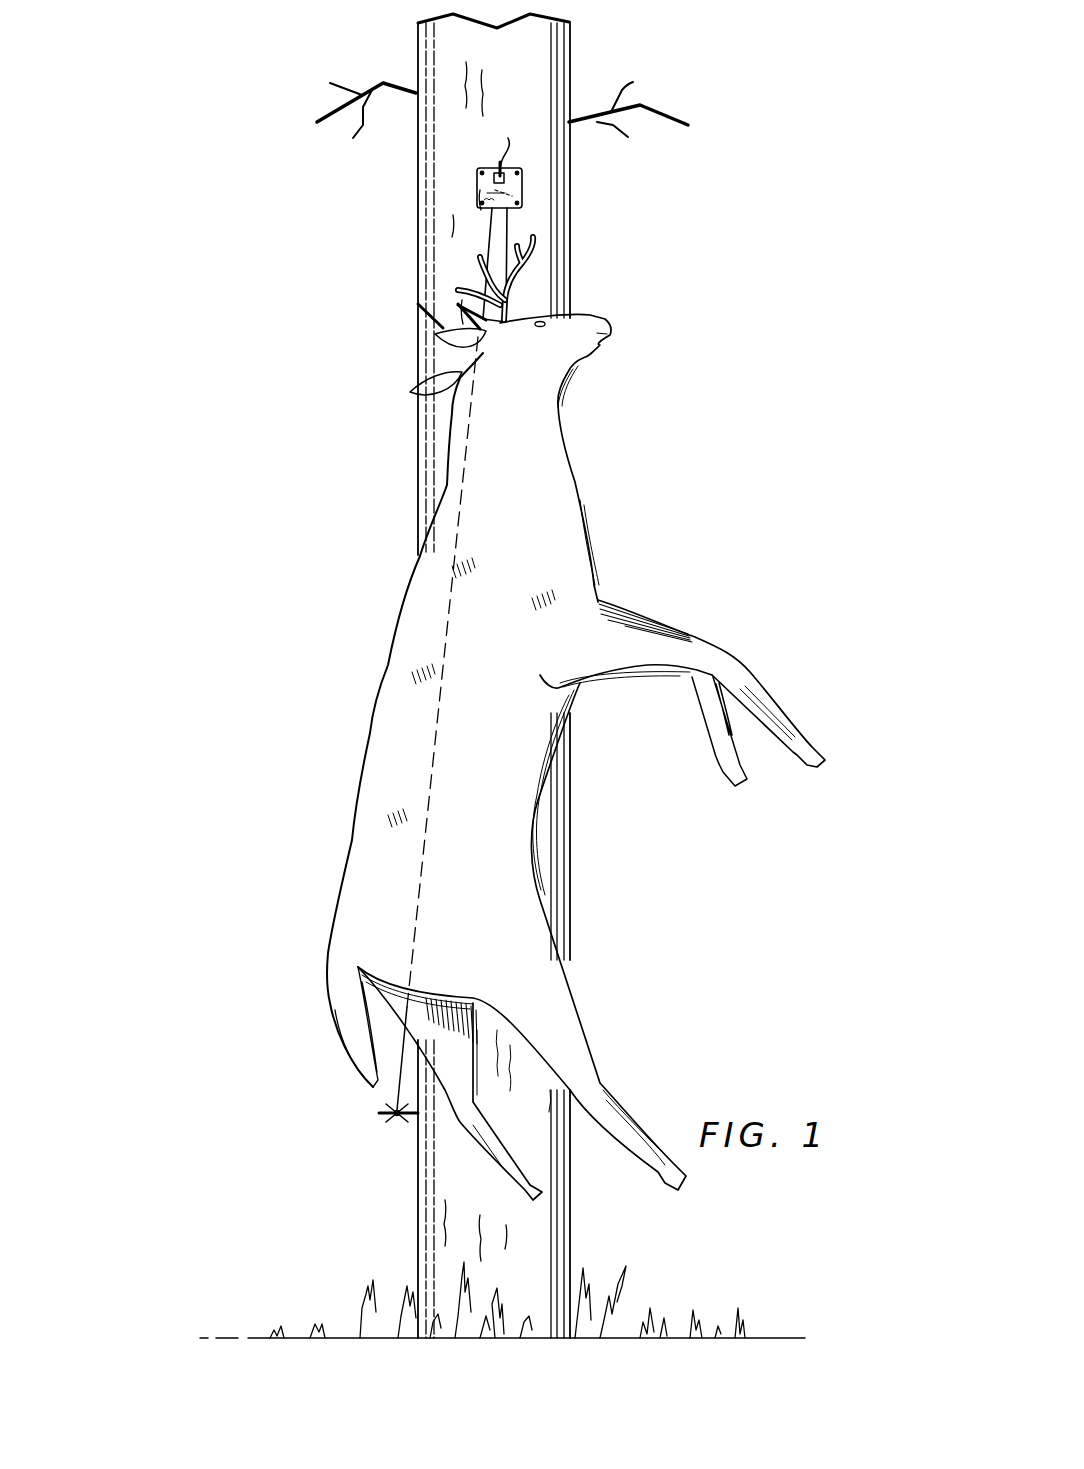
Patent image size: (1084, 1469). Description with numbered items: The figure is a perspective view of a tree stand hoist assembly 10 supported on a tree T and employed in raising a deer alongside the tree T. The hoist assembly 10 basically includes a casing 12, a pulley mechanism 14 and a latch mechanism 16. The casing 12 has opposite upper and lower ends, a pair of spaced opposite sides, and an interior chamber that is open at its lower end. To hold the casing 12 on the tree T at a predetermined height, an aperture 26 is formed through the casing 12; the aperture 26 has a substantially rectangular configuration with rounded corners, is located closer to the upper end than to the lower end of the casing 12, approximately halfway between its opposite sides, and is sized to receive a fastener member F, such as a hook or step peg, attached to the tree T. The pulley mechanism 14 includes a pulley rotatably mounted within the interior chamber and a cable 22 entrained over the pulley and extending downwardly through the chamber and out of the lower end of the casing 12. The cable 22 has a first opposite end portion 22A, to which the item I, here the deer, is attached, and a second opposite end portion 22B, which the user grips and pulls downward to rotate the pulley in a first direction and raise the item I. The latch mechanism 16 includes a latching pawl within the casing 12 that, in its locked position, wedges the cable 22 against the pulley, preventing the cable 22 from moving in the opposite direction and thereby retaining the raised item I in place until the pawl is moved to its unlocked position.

The tree T is at (569, 50).
The fastener member F is at (508, 143).
The tree stand hoist assembly 10 is at (440, 171).
The casing 12 is at (524, 169).
The pulley mechanism 14 is at (534, 197).
The latch mechanism 16 is at (466, 204).
The cable 22 is at (520, 214).
The first opposite end portion 22A is at (508, 291).
The second opposite end portion 22B is at (480, 277).
The aperture 26 is at (506, 181).
The item I is at (400, 667).